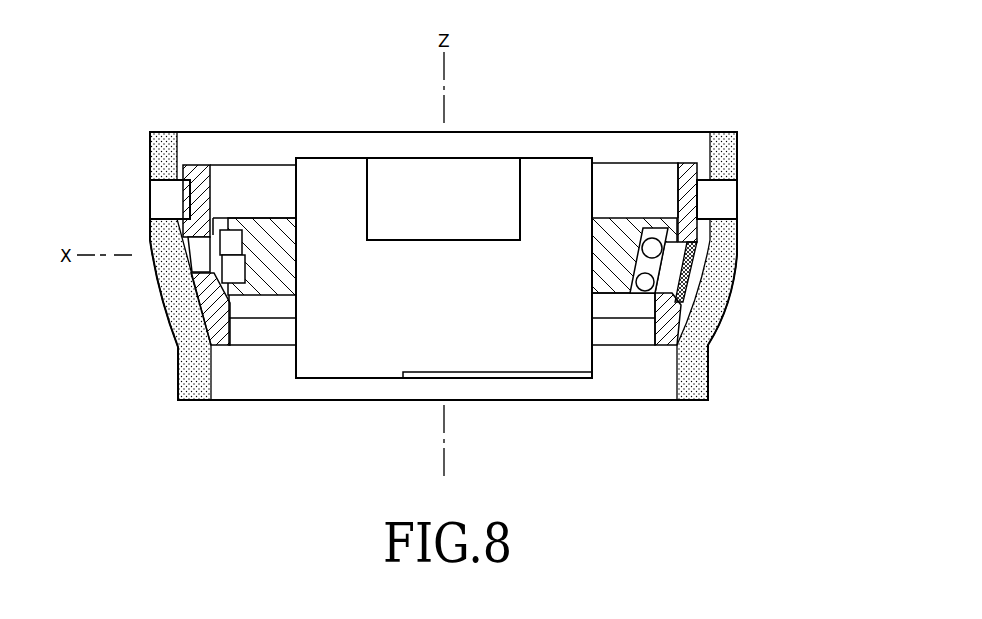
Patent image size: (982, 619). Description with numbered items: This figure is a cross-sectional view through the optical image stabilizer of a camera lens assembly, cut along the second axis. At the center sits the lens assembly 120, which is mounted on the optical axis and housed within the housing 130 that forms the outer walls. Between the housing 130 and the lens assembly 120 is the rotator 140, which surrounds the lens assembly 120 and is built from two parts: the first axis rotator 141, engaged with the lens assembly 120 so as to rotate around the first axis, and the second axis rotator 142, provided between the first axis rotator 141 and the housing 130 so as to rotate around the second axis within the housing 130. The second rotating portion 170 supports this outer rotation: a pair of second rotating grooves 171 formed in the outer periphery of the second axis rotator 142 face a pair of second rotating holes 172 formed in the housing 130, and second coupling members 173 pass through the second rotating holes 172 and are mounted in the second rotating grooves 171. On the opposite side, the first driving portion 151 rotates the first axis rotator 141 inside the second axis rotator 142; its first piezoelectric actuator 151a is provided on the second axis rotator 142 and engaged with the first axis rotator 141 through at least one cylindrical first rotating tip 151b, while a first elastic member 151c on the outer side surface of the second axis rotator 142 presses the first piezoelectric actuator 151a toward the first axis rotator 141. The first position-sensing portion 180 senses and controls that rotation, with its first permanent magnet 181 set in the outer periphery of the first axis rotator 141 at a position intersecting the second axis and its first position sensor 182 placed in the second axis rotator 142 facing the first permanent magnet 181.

The lens assembly 120 is at (481, 167).
The housing 130 is at (162, 158).
The rotator 140 is at (280, 44).
The first axis rotator 141 is at (263, 232).
The second axis rotator 142 is at (199, 172).
The first driving portion 151 is at (830, 248).
The first piezoelectric actuator 151a is at (647, 284).
The first rotating tip 151b is at (683, 300).
The first elastic member 151c is at (690, 243).
The second rotating portion 170 is at (826, 128).
The second rotating groove 171 is at (693, 177).
The second rotating hole 172 is at (720, 177).
The second coupling member 173 is at (725, 200).
The first position-sensing portion 180 is at (92, 310).
The first permanent magnet 181 is at (200, 312).
The first position sensor 182 is at (203, 260).